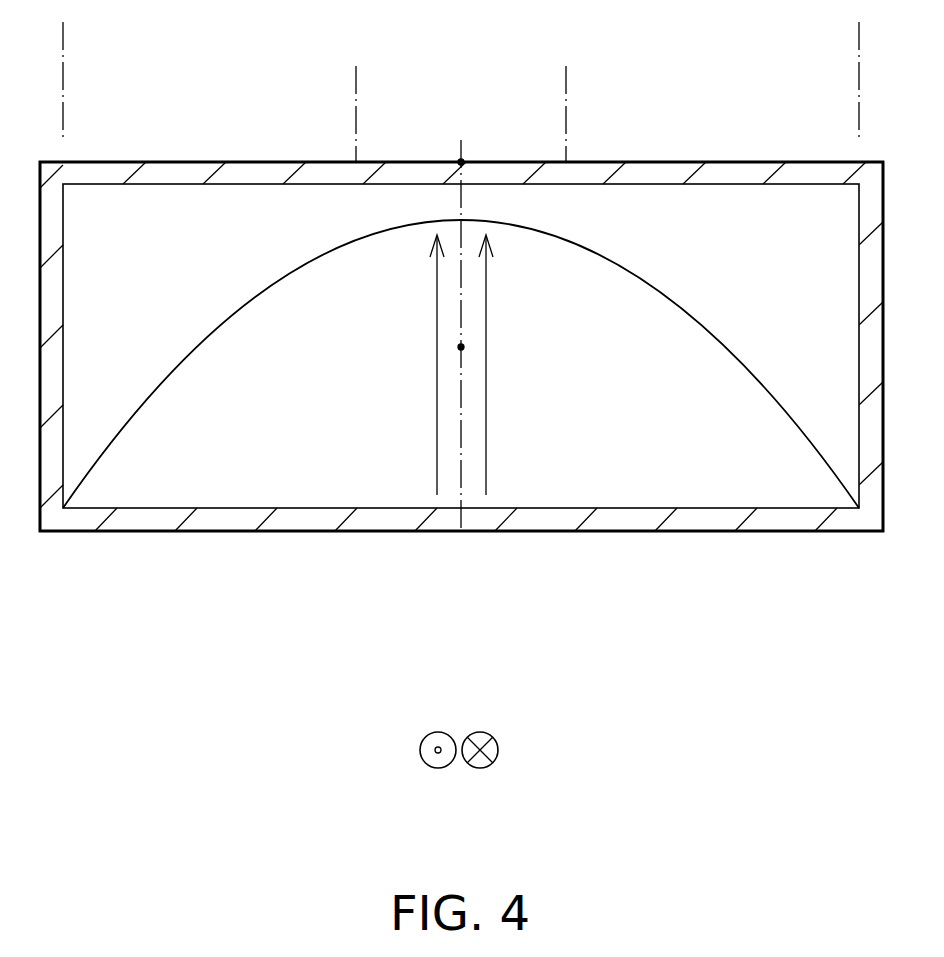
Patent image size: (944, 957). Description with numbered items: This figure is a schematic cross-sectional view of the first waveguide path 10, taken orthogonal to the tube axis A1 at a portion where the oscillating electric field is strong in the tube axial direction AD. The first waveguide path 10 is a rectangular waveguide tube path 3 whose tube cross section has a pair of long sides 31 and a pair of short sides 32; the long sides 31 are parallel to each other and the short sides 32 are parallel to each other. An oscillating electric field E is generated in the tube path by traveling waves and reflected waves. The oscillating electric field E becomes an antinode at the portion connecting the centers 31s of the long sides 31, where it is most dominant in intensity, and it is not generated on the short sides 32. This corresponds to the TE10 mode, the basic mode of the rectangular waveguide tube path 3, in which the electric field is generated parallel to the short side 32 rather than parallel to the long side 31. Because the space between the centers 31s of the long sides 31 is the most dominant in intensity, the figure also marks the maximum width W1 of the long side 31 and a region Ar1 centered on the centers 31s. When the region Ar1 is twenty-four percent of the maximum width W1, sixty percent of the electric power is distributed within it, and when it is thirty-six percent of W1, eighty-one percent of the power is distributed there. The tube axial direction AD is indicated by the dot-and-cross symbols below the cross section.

The maximum width of the long side W1 is at (859, 33).
The region Ar1 is at (356, 71).
The rectangular waveguide tube path 3 is at (732, 480).
The first waveguide path 10 is at (461, 346).
The long side 31 is at (232, 184).
The short side 32 is at (63, 280).
The center of the long side 31s is at (461, 162).
The oscillating electric field E is at (437, 300).
The tube axis A1 is at (461, 347).
The tube axial direction AD is at (459, 735).